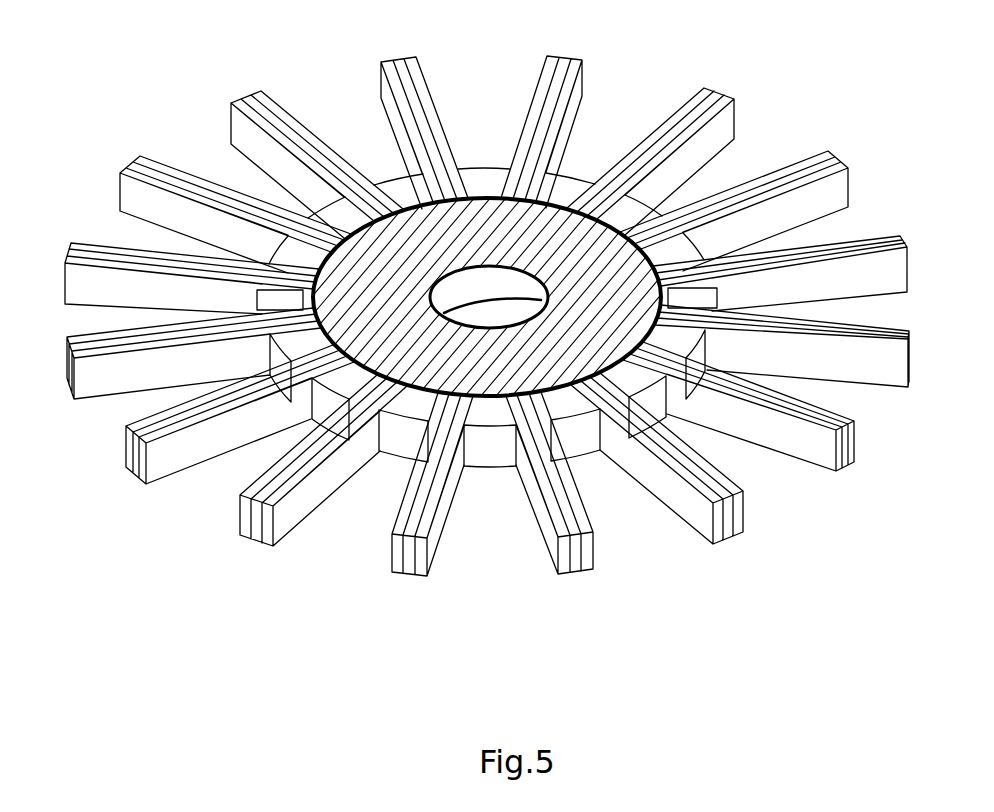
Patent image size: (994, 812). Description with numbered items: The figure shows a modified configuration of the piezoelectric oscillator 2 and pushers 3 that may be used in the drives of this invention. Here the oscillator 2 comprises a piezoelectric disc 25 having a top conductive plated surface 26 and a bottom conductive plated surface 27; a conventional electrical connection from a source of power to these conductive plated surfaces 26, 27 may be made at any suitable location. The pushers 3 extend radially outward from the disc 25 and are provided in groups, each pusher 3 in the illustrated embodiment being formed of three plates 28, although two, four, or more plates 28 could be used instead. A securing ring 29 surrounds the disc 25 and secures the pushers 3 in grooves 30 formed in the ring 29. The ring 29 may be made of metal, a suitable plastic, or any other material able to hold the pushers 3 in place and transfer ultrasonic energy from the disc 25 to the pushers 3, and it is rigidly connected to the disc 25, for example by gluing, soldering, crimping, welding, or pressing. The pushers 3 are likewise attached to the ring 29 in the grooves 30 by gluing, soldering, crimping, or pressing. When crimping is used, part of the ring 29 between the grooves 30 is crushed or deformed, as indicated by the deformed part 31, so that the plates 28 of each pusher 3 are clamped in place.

The piezoelectric oscillator 2 is at (300, 620).
The pusher 3 is at (243, 520).
The piezoelectric disc 25 is at (562, 180).
The top conductive plated surface 26 is at (480, 297).
The bottom conductive plated surface 27 is at (490, 230).
The plate 28 is at (222, 386).
The securing ring 29 is at (577, 433).
The groove 30 is at (675, 408).
The deformed part 31 is at (490, 460).